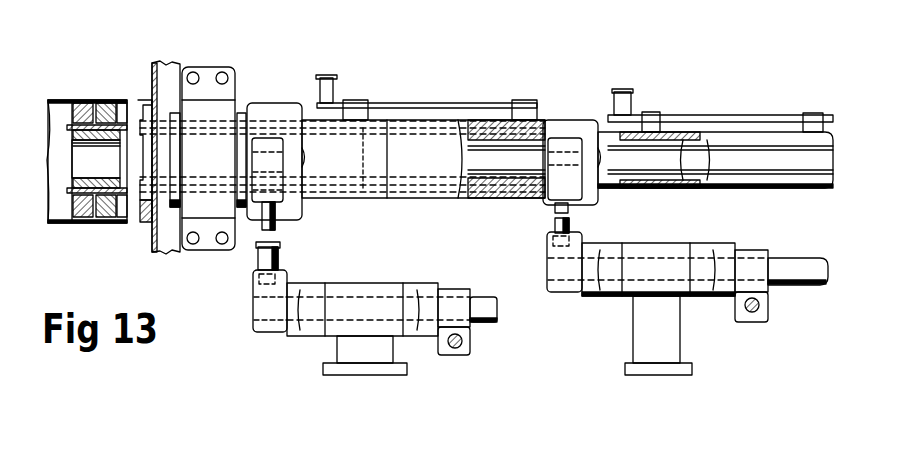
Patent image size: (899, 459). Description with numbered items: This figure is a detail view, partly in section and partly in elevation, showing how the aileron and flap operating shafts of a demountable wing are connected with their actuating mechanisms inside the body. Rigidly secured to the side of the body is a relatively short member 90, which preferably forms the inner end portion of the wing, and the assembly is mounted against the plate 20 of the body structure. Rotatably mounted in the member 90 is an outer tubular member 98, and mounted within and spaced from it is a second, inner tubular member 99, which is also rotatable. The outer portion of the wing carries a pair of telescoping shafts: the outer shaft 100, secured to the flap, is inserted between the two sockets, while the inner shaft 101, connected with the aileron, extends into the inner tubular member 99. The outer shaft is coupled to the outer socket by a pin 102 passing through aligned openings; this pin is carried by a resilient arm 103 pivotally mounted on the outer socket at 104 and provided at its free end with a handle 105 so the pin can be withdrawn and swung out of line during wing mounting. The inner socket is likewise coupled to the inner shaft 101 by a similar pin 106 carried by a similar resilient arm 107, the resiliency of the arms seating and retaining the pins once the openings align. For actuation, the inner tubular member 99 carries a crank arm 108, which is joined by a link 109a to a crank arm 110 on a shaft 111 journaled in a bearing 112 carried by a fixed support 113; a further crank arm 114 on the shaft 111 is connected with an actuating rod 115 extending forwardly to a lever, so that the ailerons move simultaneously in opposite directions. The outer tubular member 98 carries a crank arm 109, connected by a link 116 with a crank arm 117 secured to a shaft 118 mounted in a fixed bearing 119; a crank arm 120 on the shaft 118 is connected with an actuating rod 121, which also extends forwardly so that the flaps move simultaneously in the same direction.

The mounting plate 20 is at (157, 64).
The relatively short member 90 is at (78, 100).
The tubular member 98 is at (73, 113).
The second tubular member 99 is at (77, 137).
The outer shaft 100 is at (68, 128).
The inner shaft 101 is at (85, 157).
The pin 102 is at (368, 112).
The resilient arm 103 is at (447, 106).
The pivot mounting 104 is at (553, 118).
The handle 105 is at (336, 95).
The pin 106 is at (656, 118).
The resilient arm 107 is at (786, 116).
The crank arm 108 is at (553, 207).
The crank arm 109 is at (263, 148).
The link 109a is at (588, 228).
The crank arm 110 is at (548, 253).
The shaft 111 is at (795, 262).
The bearing 112 is at (656, 248).
The fixed support 113 is at (640, 336).
The crank arm 114 is at (766, 296).
The actuating rod 115 is at (762, 308).
The link 116 is at (282, 248).
The crank arm 117 is at (262, 292).
The shaft 118 is at (498, 310).
The fixed bearing 119 is at (366, 290).
The crank arm 120 is at (448, 289).
The actuating rod 121 is at (465, 343).